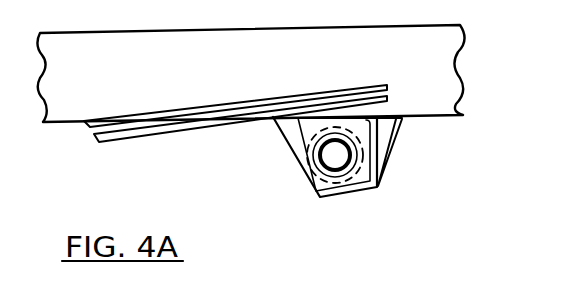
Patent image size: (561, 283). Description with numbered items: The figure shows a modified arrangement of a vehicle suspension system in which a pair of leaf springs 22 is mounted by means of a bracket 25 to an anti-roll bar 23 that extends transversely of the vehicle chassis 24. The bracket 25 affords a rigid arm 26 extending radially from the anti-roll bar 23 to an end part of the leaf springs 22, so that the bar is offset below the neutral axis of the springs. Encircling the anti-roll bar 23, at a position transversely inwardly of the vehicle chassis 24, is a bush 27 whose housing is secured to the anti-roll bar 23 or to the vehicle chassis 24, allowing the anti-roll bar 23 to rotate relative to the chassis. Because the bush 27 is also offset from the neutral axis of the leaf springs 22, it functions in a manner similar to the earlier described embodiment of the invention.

The leaf springs 22 is at (133, 142).
The anti-roll bar 23 is at (328, 186).
The vehicle chassis 24 is at (148, 77).
The bracket 25 is at (406, 161).
The rigid arm 26 is at (308, 127).
The bush 27 is at (362, 190).